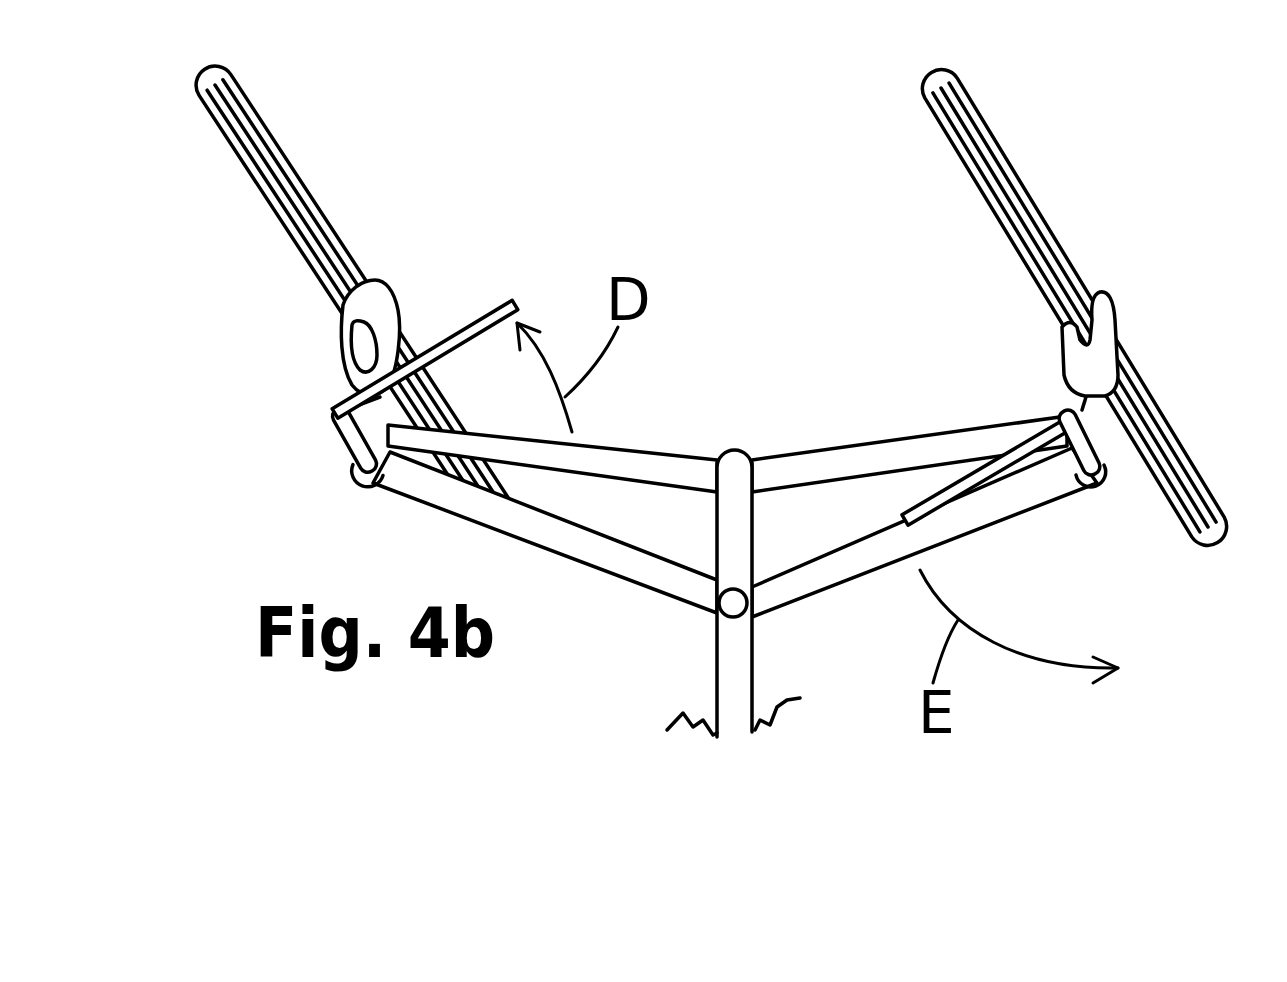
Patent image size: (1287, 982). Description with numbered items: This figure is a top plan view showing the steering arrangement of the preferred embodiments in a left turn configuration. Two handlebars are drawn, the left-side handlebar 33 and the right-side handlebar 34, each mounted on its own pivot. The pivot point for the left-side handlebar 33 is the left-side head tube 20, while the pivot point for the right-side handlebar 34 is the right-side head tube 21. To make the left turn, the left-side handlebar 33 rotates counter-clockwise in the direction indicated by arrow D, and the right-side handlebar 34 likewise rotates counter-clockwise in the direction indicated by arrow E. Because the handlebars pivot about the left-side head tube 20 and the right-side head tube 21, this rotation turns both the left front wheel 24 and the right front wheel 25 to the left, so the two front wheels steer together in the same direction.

The left front wheel 24 is at (317, 213).
The right front wheel 25 is at (1038, 232).
The left-side head tube 20 is at (385, 490).
The right-side head tube 21 is at (1077, 393).
The left-side handlebar 33 is at (467, 325).
The right-side handlebar 34 is at (968, 482).